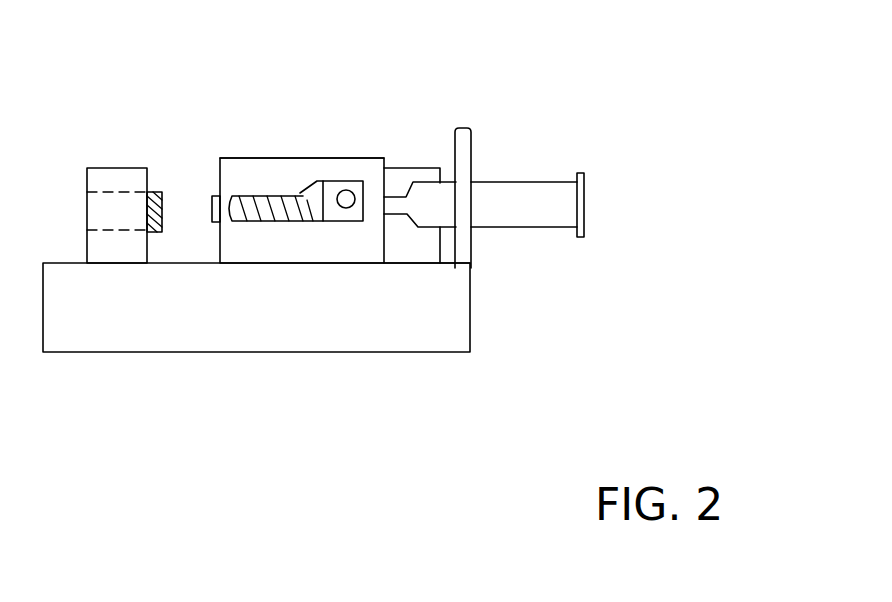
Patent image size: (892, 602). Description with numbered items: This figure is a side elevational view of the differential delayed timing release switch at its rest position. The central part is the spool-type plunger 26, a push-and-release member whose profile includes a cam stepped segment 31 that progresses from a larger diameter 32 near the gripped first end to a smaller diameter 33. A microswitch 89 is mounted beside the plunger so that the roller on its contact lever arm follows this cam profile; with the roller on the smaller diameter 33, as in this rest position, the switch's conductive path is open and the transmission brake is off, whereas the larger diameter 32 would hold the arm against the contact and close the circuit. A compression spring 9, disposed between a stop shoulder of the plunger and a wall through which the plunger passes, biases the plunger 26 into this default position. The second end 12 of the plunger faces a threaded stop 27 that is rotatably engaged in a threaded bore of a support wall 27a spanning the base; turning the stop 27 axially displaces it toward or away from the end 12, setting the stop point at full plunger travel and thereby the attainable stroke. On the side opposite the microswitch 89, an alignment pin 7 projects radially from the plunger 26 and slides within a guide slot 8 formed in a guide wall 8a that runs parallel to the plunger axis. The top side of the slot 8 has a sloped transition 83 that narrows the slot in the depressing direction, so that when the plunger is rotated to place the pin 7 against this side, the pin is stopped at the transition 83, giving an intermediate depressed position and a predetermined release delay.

The alignment pin 7 is at (346, 199).
The guide slot 8 is at (250, 223).
The guide wall 8a is at (332, 168).
The sloped transition 83 is at (303, 192).
The compression spring 9 is at (297, 212).
The second end 12 is at (213, 217).
The plunger 26 is at (525, 230).
The threaded stop 27 is at (163, 206).
The support wall 27a is at (117, 168).
The cam stepped segment 31 is at (410, 197).
The larger diameter 32 is at (440, 182).
The smaller diameter 33 is at (387, 217).
The microswitch 89 is at (412, 252).